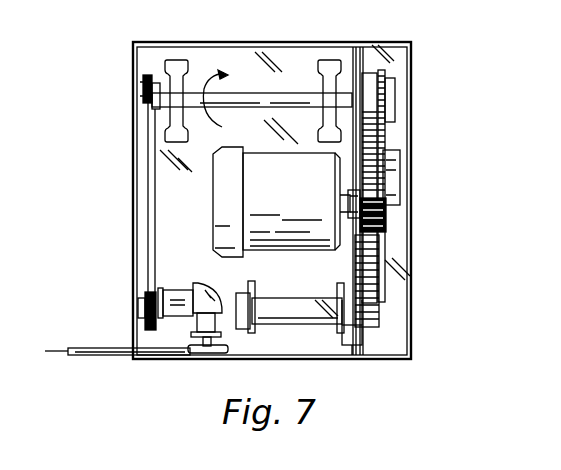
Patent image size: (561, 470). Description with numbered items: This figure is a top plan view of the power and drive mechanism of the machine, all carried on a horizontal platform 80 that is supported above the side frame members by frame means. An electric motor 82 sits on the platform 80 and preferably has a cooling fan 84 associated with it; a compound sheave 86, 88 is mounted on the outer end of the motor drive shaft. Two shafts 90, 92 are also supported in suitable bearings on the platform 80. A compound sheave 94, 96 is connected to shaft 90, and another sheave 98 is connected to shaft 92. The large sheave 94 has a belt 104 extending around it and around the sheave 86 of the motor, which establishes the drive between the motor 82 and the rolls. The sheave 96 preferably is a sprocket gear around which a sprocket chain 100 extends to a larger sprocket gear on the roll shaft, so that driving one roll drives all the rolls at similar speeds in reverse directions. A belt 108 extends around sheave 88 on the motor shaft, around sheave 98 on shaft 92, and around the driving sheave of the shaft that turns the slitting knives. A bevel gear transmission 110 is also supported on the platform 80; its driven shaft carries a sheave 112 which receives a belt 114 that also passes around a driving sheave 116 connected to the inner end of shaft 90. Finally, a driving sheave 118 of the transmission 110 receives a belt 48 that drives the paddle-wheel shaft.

The horizontal platform 80 is at (262, 45).
The large sheave 94 is at (363, 52).
The shaft 90 is at (239, 96).
The sheave 96 is at (388, 92).
The sprocket chain 100 is at (385, 135).
The belt 104 is at (397, 165).
The sheave 86 is at (355, 201).
The sheave 88 is at (378, 226).
The belt 108 is at (368, 265).
The sheave 98 is at (380, 326).
The cooling fan 84 is at (222, 223).
The electric motor 82 is at (261, 206).
The bevel gear transmission 110 is at (195, 288).
The shaft 92 is at (270, 300).
The driving sheave 116 is at (143, 100).
The belt 114 is at (150, 195).
The sheave 112 is at (138, 300).
The belt 48 is at (122, 358).
The driving sheave 118 is at (233, 356).